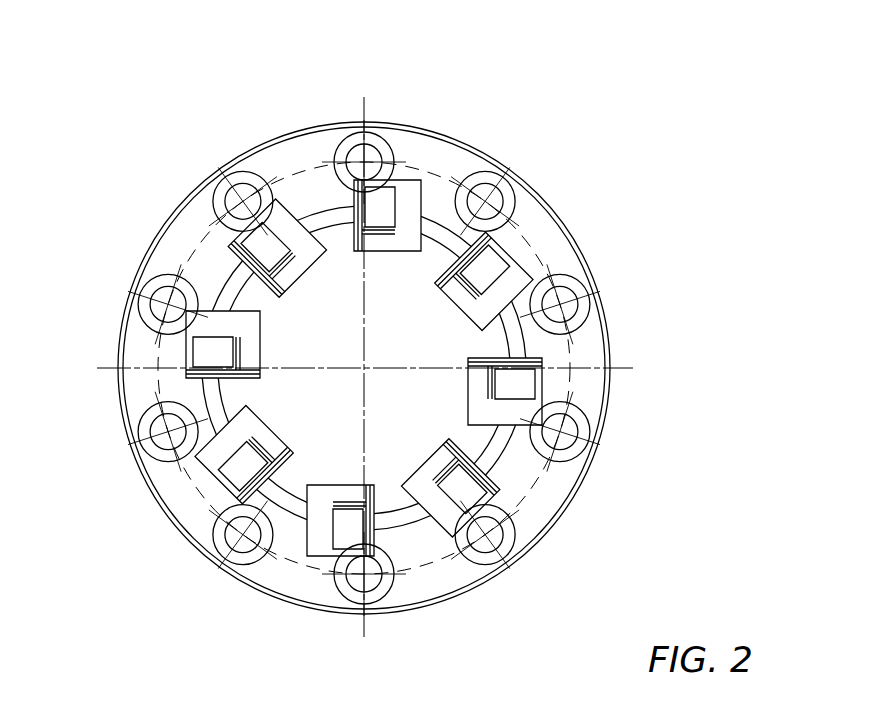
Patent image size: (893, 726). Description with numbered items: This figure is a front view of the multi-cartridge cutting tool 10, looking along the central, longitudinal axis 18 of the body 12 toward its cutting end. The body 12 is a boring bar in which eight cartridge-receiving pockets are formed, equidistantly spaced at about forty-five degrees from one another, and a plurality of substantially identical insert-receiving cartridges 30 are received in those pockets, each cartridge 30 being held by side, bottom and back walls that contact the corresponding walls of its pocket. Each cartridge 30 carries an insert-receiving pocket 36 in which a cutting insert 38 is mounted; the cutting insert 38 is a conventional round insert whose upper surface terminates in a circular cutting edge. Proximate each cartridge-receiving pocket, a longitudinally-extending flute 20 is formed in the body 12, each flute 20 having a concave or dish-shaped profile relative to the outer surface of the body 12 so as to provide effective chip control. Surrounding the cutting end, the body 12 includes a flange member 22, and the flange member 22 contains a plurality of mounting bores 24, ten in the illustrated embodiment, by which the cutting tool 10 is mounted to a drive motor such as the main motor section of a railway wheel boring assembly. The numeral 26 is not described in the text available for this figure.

The cutting tool 10 is at (641, 105).
The body 12 is at (514, 608).
The central, longitudinal axis 18 is at (367, 366).
The longitudinally-extending flute 20 is at (330, 212).
The flange member 22 is at (540, 527).
The mounting bores 24 is at (593, 428).
The hole bores 26 is at (552, 295).
The insert-receiving cartridge 30 is at (282, 200).
The insert-receiving pocket 36 is at (402, 170).
The cutting insert 38 is at (377, 188).